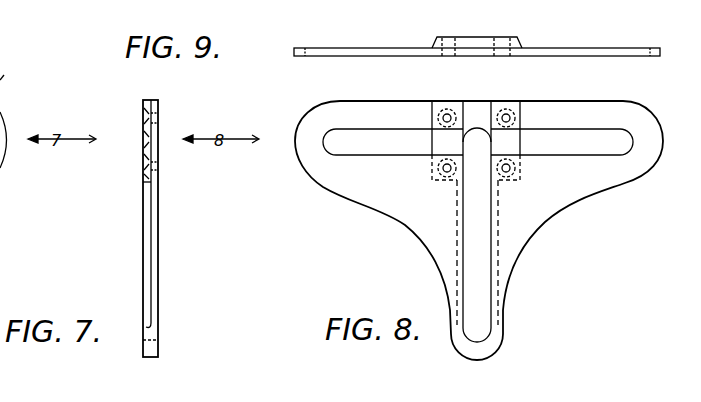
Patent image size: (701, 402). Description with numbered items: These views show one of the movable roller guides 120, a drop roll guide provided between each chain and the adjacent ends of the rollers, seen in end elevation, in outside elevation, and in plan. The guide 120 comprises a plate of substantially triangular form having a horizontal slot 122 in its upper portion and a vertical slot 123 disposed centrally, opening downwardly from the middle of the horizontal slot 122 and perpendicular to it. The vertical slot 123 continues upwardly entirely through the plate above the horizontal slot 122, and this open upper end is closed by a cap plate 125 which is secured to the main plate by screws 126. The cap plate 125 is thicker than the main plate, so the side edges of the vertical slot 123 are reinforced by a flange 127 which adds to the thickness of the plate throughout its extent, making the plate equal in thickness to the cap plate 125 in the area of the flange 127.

In FIG. 7, the movable roller guide 120 is at (168, 250).
In FIG. 8, the movable roller guide 120 is at (570, 193).
In FIG. 9, the movable roller guide 120 is at (579, 57).
In FIG. 8, the horizontal slot 122 is at (420, 154).
In FIG. 8, the vertical slot 123 is at (470, 236).
In FIG. 7, the cap plate 125 is at (146, 140).
In FIG. 8, the cap plate 125 is at (475, 110).
In FIG. 9, the cap plate 125 is at (483, 58).
In FIG. 8, the screws 126 is at (509, 165).
In FIG. 7, the flange 127 is at (148, 230).